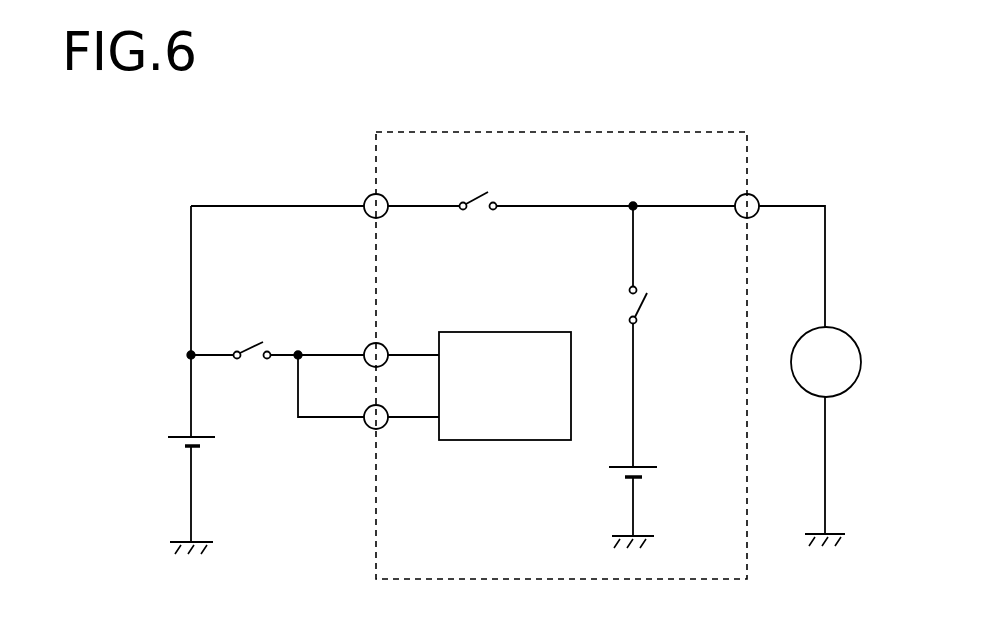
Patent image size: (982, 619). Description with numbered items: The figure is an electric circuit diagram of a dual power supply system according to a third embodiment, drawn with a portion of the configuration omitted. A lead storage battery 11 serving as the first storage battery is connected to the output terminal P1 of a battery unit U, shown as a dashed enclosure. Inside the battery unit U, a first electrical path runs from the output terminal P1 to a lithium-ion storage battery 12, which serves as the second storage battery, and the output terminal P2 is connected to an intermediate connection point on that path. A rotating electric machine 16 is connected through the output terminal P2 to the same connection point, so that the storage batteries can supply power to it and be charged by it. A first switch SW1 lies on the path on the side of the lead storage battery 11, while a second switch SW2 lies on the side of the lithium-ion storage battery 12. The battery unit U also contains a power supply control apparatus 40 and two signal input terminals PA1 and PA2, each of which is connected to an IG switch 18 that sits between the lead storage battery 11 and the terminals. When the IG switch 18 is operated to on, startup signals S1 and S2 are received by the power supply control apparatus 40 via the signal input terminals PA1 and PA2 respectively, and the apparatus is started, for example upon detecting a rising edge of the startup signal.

The lead storage battery 11 is at (205, 436).
The lithium-ion storage battery 12 is at (643, 466).
The rotating electric machine 16 is at (840, 330).
The IG switch 18 is at (258, 343).
The power supply control apparatus 40 is at (535, 332).
The battery unit U is at (705, 130).
The output terminal P1 is at (366, 197).
The output terminal P2 is at (758, 196).
The signal input terminal PA1 is at (366, 347).
The signal input terminal PA2 is at (366, 409).
The startup signal S1 is at (413, 344).
The startup signal S2 is at (413, 406).
The first switch SW1 is at (490, 192).
The second switch SW2 is at (645, 300).